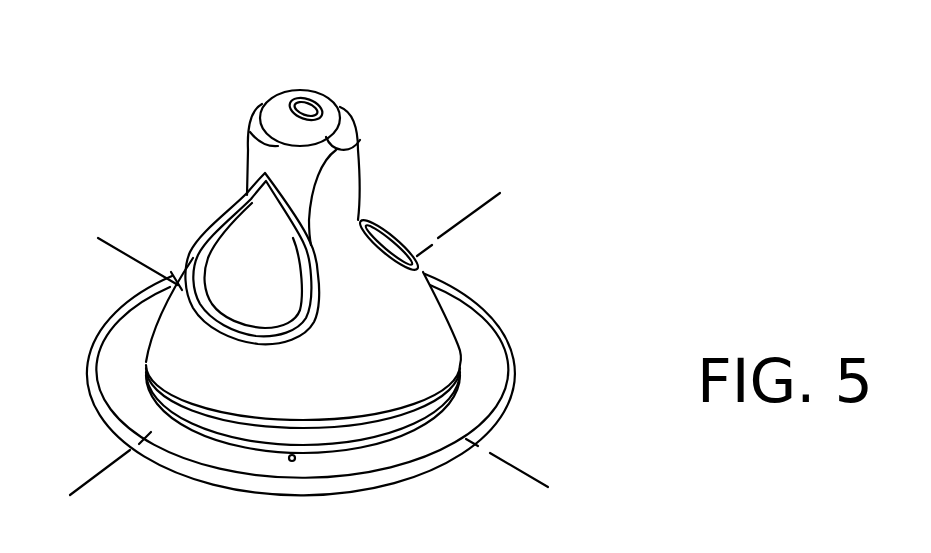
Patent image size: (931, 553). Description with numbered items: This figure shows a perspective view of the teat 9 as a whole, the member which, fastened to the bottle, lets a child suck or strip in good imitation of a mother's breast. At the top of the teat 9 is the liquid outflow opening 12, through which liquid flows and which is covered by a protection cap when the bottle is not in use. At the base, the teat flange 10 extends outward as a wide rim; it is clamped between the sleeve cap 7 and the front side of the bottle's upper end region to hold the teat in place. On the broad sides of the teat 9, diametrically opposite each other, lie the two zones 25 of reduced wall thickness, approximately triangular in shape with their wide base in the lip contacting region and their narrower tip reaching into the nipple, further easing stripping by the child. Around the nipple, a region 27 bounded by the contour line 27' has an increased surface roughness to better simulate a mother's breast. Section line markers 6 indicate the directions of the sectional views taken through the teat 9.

The section line 6-6 (view direction of FIG. 6) 6 is at (134, 224).
The sleeve cap 7 is at (461, 183).
The teat 9 is at (197, 168).
The teat flange 10 is at (478, 346).
The liquid outflow opening 12 is at (303, 106).
The zones of reduced wall thickness 25 is at (230, 257).
The region of increased surface roughness 27 is at (253, 104).
The contour line 27' is at (354, 151).